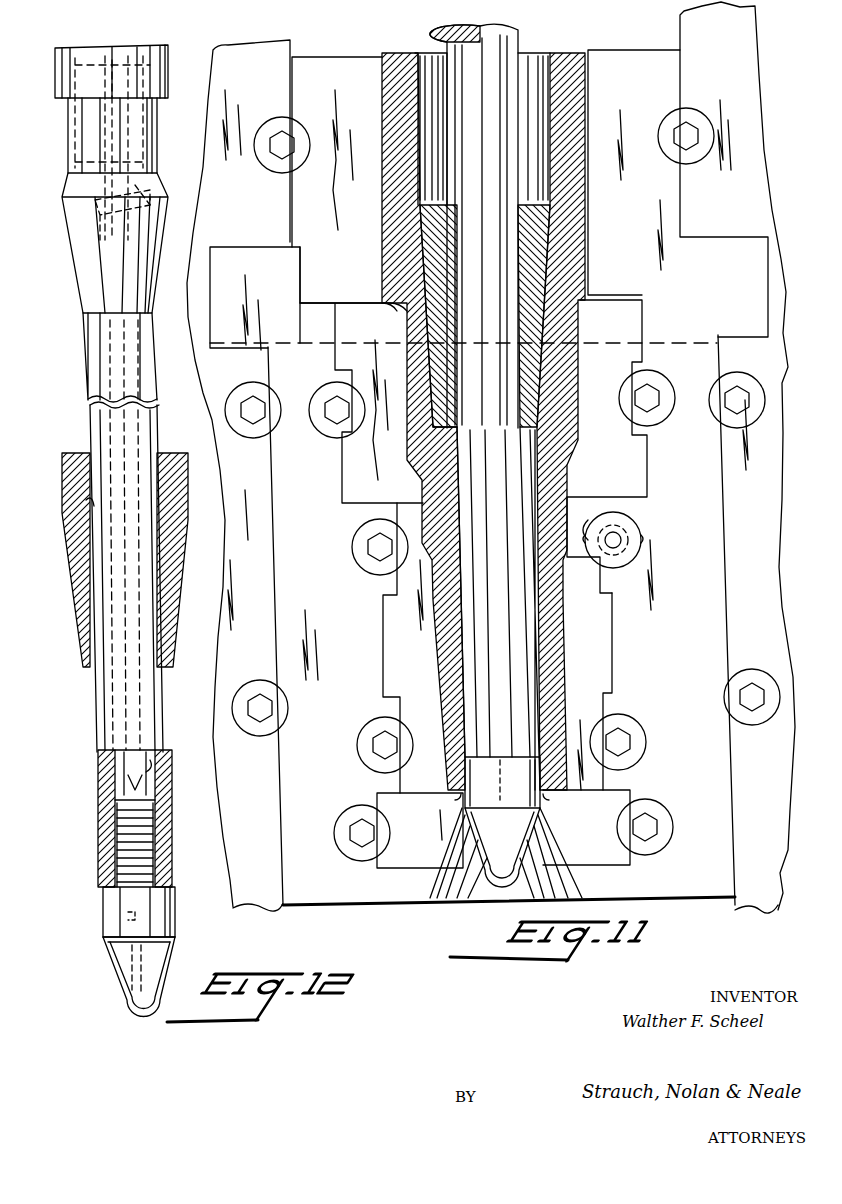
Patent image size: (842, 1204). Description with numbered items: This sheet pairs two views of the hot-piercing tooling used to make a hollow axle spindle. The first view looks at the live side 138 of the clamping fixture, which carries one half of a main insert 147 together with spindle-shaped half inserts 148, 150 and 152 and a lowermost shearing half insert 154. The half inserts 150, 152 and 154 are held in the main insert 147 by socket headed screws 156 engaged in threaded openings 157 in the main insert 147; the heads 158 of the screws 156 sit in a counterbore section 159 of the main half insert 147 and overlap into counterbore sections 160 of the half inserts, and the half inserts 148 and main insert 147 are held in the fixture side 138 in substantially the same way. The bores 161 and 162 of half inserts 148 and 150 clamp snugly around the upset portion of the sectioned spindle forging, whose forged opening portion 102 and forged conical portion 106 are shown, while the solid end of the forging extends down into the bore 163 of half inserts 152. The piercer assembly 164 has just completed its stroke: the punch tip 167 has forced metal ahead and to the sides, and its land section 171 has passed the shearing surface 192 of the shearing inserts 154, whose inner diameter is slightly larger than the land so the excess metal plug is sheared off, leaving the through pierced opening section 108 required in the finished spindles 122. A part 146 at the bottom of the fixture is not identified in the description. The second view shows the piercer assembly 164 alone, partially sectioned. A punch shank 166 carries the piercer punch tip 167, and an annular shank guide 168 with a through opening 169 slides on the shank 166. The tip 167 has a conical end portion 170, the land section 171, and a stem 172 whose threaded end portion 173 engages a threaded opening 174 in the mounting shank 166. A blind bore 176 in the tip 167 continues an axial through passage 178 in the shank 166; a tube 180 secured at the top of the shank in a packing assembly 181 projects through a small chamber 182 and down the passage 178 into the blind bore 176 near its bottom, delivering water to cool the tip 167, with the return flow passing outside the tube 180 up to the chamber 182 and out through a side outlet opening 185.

In FIG. 11, the forged opening portion 102 is at (550, 180).
In FIG. 11, the forged conical portion 106 is at (545, 440).
In FIG. 11, the through pierced opening section 108 is at (536, 615).
In FIG. 11, the spindle 122 is at (570, 56).
In FIG. 11, the live side of fixture assembly 138 is at (237, 60).
In FIG. 11, the bottom plate 146 is at (705, 892).
In FIG. 11, the main insert 147 is at (243, 262).
In FIG. 11, the half insert 148 is at (300, 200).
In FIG. 11, the half insert 150 is at (352, 470).
In FIG. 11, the half insert 152 is at (384, 640).
In FIG. 11, the shearing half insert 154 is at (386, 795).
In FIG. 11, the socket headed screw 156 is at (692, 110).
In FIG. 11, the threaded opening 157 is at (615, 552).
In FIG. 11, the screw head 158 is at (756, 668).
In FIG. 11, the counterbore section 159 is at (640, 532).
In FIG. 11, the counterbore section 160 is at (592, 534).
In FIG. 11, the bore 161 is at (586, 218).
In FIG. 11, the bore 162 is at (570, 384).
In FIG. 11, the bore 163 is at (566, 640).
In FIG. 12, the piercer assembly 164 is at (66, 383).
In FIG. 12, the punch shank 166 is at (92, 432).
In FIG. 11, the punch shank 166 is at (523, 507).
In FIG. 12, the piercer punch tip 167 is at (118, 935).
In FIG. 11, the piercer punch tip 167 is at (542, 816).
In FIG. 12, the annular shank guide 168 is at (82, 548).
In FIG. 11, the annular shank guide 168 is at (552, 263).
In FIG. 12, the through opening 169 is at (88, 503).
In FIG. 12, the conical end portion 170 is at (118, 968).
In FIG. 11, the conical end portion 170 is at (529, 855).
In FIG. 12, the land section 171 is at (103, 892).
In FIG. 11, the land section 171 is at (544, 776).
In FIG. 12, the stem 172 is at (118, 856).
In FIG. 12, the threaded end portion 173 is at (118, 826).
In FIG. 12, the threaded opening 174 is at (116, 808).
In FIG. 12, the blind bore 176 is at (126, 915).
In FIG. 12, the axial through passage 178 is at (124, 768).
In FIG. 12, the tube 180 is at (152, 776).
In FIG. 12, the packing assembly 181 is at (72, 128).
In FIG. 12, the small chamber 182 is at (98, 226).
In FIG. 12, the side outlet opening 185 is at (160, 180).
In FIG. 11, the shearing surface 192 is at (503, 780).